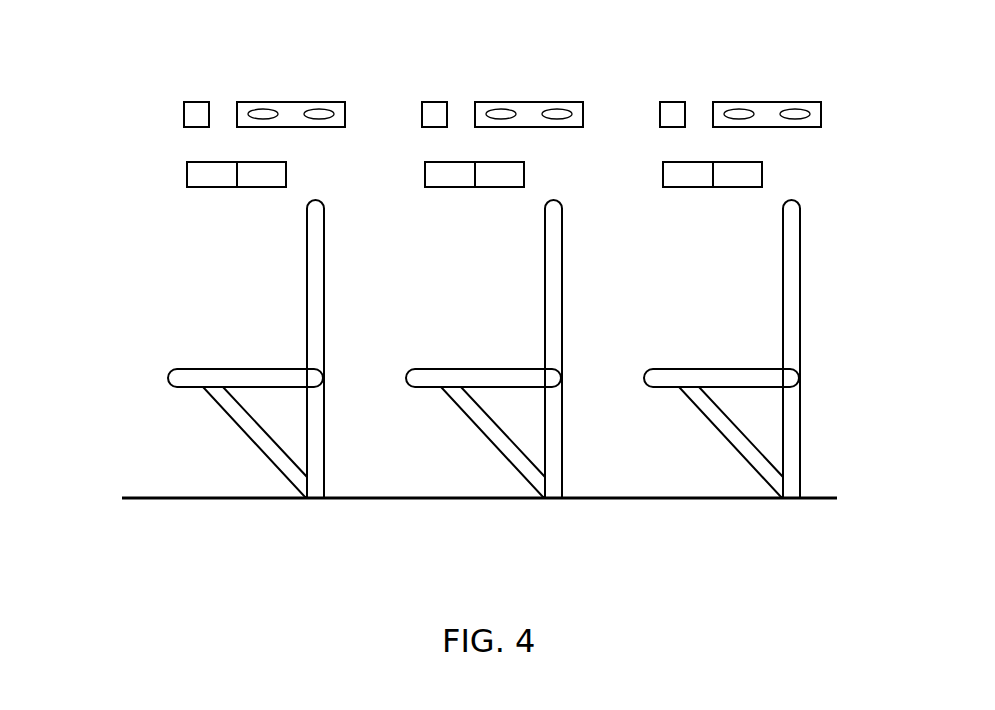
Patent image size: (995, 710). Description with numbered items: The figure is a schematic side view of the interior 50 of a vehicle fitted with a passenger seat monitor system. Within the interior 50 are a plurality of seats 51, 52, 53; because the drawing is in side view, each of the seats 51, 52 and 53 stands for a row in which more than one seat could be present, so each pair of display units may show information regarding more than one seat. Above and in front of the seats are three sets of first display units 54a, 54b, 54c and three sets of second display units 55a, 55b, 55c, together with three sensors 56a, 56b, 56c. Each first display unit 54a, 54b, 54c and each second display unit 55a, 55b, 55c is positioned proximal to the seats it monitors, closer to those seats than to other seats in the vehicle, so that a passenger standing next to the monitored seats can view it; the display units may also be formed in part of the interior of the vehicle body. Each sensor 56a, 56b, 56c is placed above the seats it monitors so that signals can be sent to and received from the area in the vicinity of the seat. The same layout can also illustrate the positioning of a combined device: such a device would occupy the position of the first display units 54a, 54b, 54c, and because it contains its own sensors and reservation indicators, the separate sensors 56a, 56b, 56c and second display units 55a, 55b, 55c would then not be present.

The interior 50 is at (133, 468).
The seat 51 is at (313, 484).
The seat 52 is at (551, 484).
The seat 53 is at (789, 484).
The first display unit 54a is at (290, 112).
The first display unit 54b is at (528, 112).
The first display unit 54c is at (766, 112).
The second display unit 55a is at (255, 180).
The second display unit 55b is at (493, 180).
The second display unit 55c is at (731, 180).
The sensor 56a is at (197, 109).
The sensor 56b is at (435, 109).
The sensor 56c is at (673, 109).